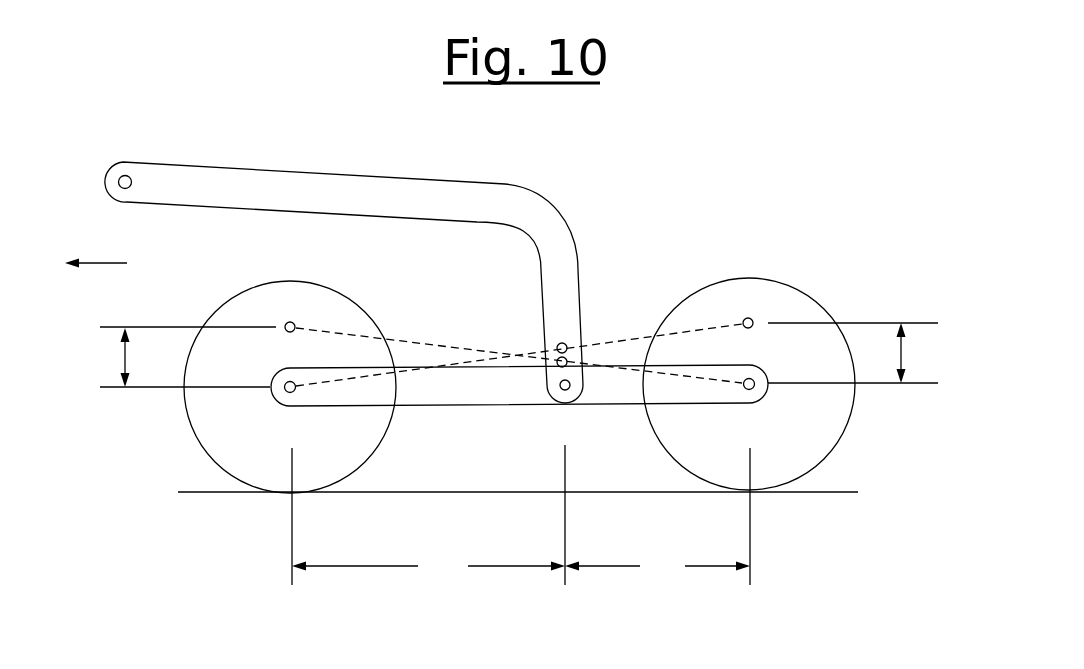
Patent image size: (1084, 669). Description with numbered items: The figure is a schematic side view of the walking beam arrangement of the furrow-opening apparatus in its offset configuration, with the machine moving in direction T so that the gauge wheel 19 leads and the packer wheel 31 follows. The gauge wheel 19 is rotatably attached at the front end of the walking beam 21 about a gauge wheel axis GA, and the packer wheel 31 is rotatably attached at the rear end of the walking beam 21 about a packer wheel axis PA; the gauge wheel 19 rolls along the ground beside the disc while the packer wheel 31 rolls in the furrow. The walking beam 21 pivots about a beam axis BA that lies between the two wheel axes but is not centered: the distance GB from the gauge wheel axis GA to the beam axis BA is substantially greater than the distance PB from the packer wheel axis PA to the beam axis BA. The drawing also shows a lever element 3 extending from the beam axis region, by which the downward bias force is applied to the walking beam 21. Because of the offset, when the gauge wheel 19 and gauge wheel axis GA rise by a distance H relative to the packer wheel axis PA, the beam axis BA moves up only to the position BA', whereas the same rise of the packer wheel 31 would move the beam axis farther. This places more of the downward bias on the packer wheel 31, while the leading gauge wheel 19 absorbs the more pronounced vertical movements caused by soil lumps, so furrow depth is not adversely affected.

The lever 3 is at (340, 175).
The gauge wheel 19 is at (202, 450).
The walking beam 21 is at (450, 405).
The packer wheel 31 is at (840, 443).
The gauge wheel axis GA is at (290, 387).
The packer wheel axis PA is at (745, 386).
The beam axis BA is at (599, 420).
The beam axis position BA' is at (514, 403).
The distance from gauge wheel axis to beam axis GB is at (428, 568).
The distance from packer wheel axis to beam axis PB is at (657, 568).
The distance H is at (514, 355).
The direction T is at (84, 265).